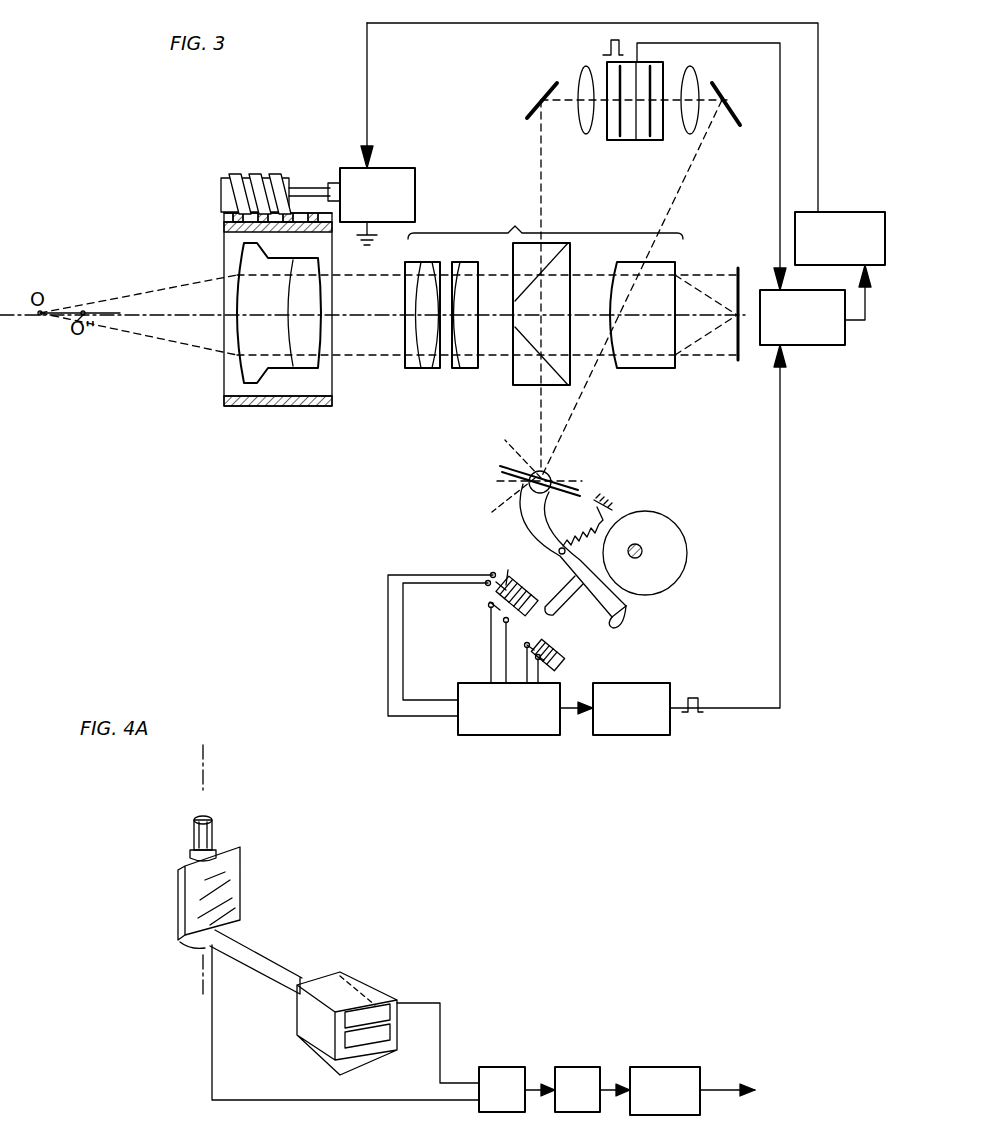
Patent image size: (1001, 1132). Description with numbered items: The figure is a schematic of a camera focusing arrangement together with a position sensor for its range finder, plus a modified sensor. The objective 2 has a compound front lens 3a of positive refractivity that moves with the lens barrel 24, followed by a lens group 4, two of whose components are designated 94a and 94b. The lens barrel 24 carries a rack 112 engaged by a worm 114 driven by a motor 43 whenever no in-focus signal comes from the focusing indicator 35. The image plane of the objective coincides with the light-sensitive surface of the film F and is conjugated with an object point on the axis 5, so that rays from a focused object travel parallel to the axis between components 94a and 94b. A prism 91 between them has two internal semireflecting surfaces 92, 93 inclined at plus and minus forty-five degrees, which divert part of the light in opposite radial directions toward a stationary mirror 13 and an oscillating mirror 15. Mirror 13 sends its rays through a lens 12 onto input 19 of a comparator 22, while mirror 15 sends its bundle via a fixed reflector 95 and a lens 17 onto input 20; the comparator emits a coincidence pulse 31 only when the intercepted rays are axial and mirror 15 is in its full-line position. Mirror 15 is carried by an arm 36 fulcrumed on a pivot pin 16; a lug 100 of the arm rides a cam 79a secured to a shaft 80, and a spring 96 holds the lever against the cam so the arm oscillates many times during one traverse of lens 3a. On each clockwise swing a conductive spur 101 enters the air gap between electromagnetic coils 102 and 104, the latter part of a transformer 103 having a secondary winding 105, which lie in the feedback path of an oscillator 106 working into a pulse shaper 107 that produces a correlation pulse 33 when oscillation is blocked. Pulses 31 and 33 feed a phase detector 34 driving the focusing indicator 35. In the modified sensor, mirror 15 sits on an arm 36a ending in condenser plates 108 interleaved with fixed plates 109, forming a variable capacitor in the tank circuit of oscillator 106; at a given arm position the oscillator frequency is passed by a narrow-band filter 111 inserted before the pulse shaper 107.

In FIG. 3, the objective 2 is at (222, 390).
In FIG. 3, the compound front lens 3a is at (330, 345).
In FIG. 3, the lens group 4 is at (545, 221).
In FIG. 3, the axis 5 is at (187, 313).
In FIG. 3, the lens 12 is at (586, 75).
In FIG. 3, the stationary mirror 13 is at (542, 98).
In FIG. 3, the mirror 15 is at (500, 482).
In FIG. 4A, the mirror 15 is at (240, 890).
In FIG. 3, the pivot pin 16 is at (549, 474).
In FIG. 4A, the pivot pin 16 is at (213, 826).
In FIG. 3, the lens 17 is at (692, 82).
In FIG. 3, the comparator input 19 is at (618, 140).
In FIG. 3, the comparator input 20 is at (652, 140).
In FIG. 3, the comparator 22 is at (636, 126).
In FIG. 3, the lens barrel 24 is at (332, 404).
In FIG. 3, the coincidence pulse 31 is at (602, 43).
In FIG. 3, the correlation pulse 33 is at (706, 697).
In FIG. 3, the phase detector 34 is at (795, 345).
In FIG. 3, the focusing indicator 35 is at (885, 240).
In FIG. 3, the arm 36 is at (554, 538).
In FIG. 4A, the arm 36a is at (262, 985).
In FIG. 3, the motor 43 is at (415, 190).
In FIG. 3, the cam 79a is at (668, 583).
In FIG. 3, the shaft 80 is at (642, 551).
In FIG. 3, the prism 91 is at (539, 337).
In FIG. 3, the semireflecting surface 92 is at (560, 272).
In FIG. 3, the semireflecting surface 93 is at (530, 358).
In FIG. 3, the lens component 94a is at (460, 368).
In FIG. 3, the lens component 94b is at (643, 368).
In FIG. 3, the fixed reflector 95 is at (734, 108).
In FIG. 3, the spring 96 is at (604, 512).
In FIG. 3, the lug 100 is at (612, 625).
In FIG. 3, the conductive spur 101 is at (555, 612).
In FIG. 3, the electromagnetic coil 102 is at (555, 650).
In FIG. 3, the transformer 103 is at (492, 598).
In FIG. 3, the electromagnetic coil 104 is at (510, 583).
In FIG. 3, the secondary winding 105 is at (508, 580).
In FIG. 3, the oscillator 106 is at (458, 720).
In FIG. 4A, the oscillator 106 is at (512, 1056).
In FIG. 3, the pulse shaper 107 is at (670, 732).
In FIG. 4A, the pulse shaper 107 is at (660, 1067).
In FIG. 4A, the condenser plates 108 is at (312, 1020).
In FIG. 4A, the fixed condenser plates 109 is at (372, 990).
In FIG. 4A, the narrow-band filter 111 is at (560, 1067).
In FIG. 3, the rack 112 is at (332, 228).
In FIG. 3, the worm 114 is at (268, 178).
In FIG. 3, the film F is at (738, 355).